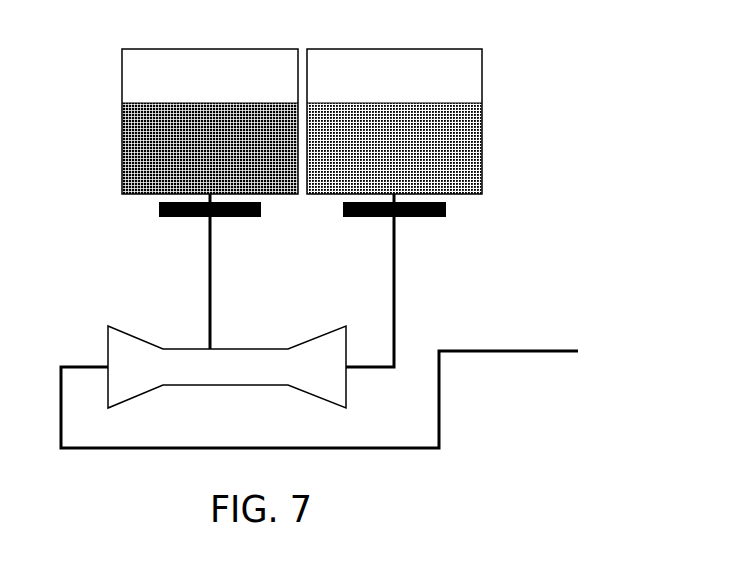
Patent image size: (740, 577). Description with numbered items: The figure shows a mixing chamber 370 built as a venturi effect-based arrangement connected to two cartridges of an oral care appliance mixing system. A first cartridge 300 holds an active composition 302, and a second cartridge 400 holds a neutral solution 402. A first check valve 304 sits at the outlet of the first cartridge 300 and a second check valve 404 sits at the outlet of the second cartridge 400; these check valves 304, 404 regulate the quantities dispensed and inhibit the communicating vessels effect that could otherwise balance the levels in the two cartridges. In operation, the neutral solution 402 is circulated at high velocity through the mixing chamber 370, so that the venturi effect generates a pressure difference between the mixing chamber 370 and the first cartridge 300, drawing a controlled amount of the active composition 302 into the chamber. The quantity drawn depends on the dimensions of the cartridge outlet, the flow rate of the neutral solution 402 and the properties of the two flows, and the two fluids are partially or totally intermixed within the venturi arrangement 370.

The first cartridge 300 is at (122, 72).
The active composition 302 is at (143, 130).
The first check valve 304 is at (167, 218).
The second cartridge 400 is at (482, 68).
The neutral solution 402 is at (462, 130).
The second check valve 404 is at (437, 217).
The mixing chamber 370 is at (140, 352).